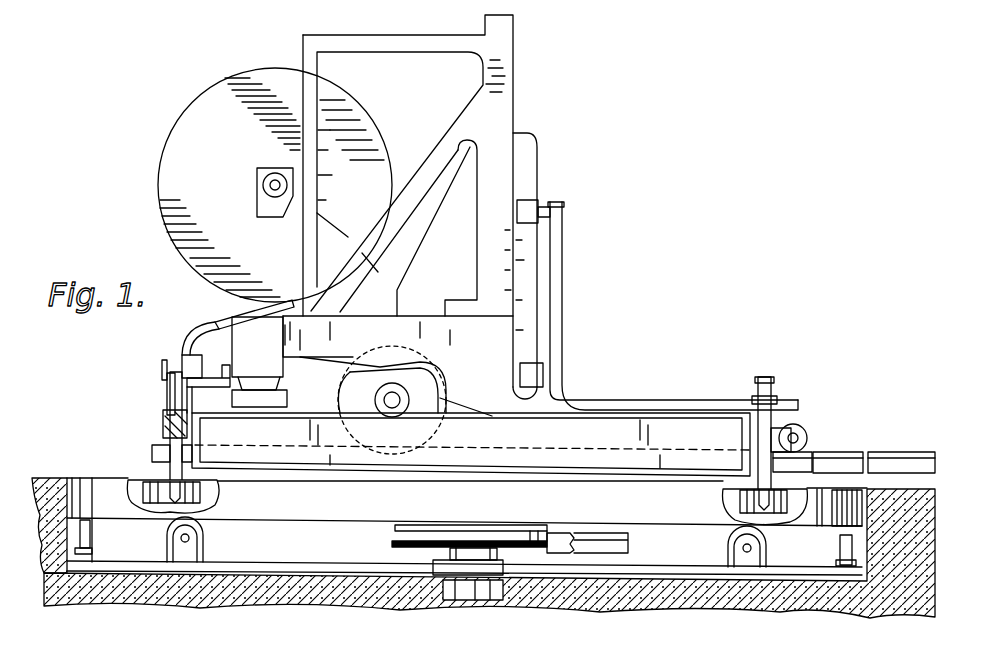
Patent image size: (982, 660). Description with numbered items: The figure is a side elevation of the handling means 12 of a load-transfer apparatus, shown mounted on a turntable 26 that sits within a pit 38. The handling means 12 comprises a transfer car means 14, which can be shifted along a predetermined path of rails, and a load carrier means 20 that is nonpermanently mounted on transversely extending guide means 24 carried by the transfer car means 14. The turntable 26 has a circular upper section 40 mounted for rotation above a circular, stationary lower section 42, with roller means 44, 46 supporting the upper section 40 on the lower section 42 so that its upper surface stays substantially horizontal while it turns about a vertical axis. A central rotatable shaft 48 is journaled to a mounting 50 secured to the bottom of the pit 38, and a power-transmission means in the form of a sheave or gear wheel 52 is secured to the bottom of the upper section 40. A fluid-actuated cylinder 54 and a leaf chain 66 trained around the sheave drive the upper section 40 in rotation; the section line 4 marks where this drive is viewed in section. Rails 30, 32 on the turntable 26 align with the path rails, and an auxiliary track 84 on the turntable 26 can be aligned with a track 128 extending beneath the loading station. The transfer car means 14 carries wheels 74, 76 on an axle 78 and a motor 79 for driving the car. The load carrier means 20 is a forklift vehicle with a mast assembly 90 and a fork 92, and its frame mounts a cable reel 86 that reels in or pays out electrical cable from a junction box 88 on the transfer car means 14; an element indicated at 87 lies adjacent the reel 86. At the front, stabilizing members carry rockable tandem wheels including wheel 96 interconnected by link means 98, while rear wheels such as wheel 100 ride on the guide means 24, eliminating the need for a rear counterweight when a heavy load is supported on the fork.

The section line 4- 4 is at (392, 535).
The handling means 12 is at (134, 119).
The transfer car means 14 is at (600, 425).
The load carrier means 20 is at (432, 328).
The guide means 24 is at (525, 448).
The turntable 26 is at (86, 474).
The rail 30 is at (757, 487).
The rail 32 is at (163, 480).
The pit 38 is at (236, 572).
The upper section 40 is at (297, 512).
The lower section 42 is at (315, 562).
The roller means 44 is at (90, 527).
The roller means 46 is at (845, 532).
The central rotatable shaft 48 is at (500, 558).
The mounting 50 is at (455, 575).
The power-transmission means 52 is at (392, 545).
The first fluid actuated cylinder 54 is at (606, 545).
The leaf chain 66 is at (452, 533).
The wheel 74 is at (768, 378).
The wheel 76 is at (165, 388).
The axle 78 is at (163, 422).
The motor 79 is at (243, 353).
The auxiliary track 84 is at (840, 457).
The cable reel 86 is at (164, 152).
The belt 87 is at (230, 312).
The junction box 88 is at (182, 360).
The mast assembly 90 is at (525, 153).
The fork 92 is at (675, 400).
The tandem wheel 96 is at (800, 446).
The link means 98 is at (792, 430).
The rear wheel 100 is at (353, 397).
The track 128 is at (890, 458).